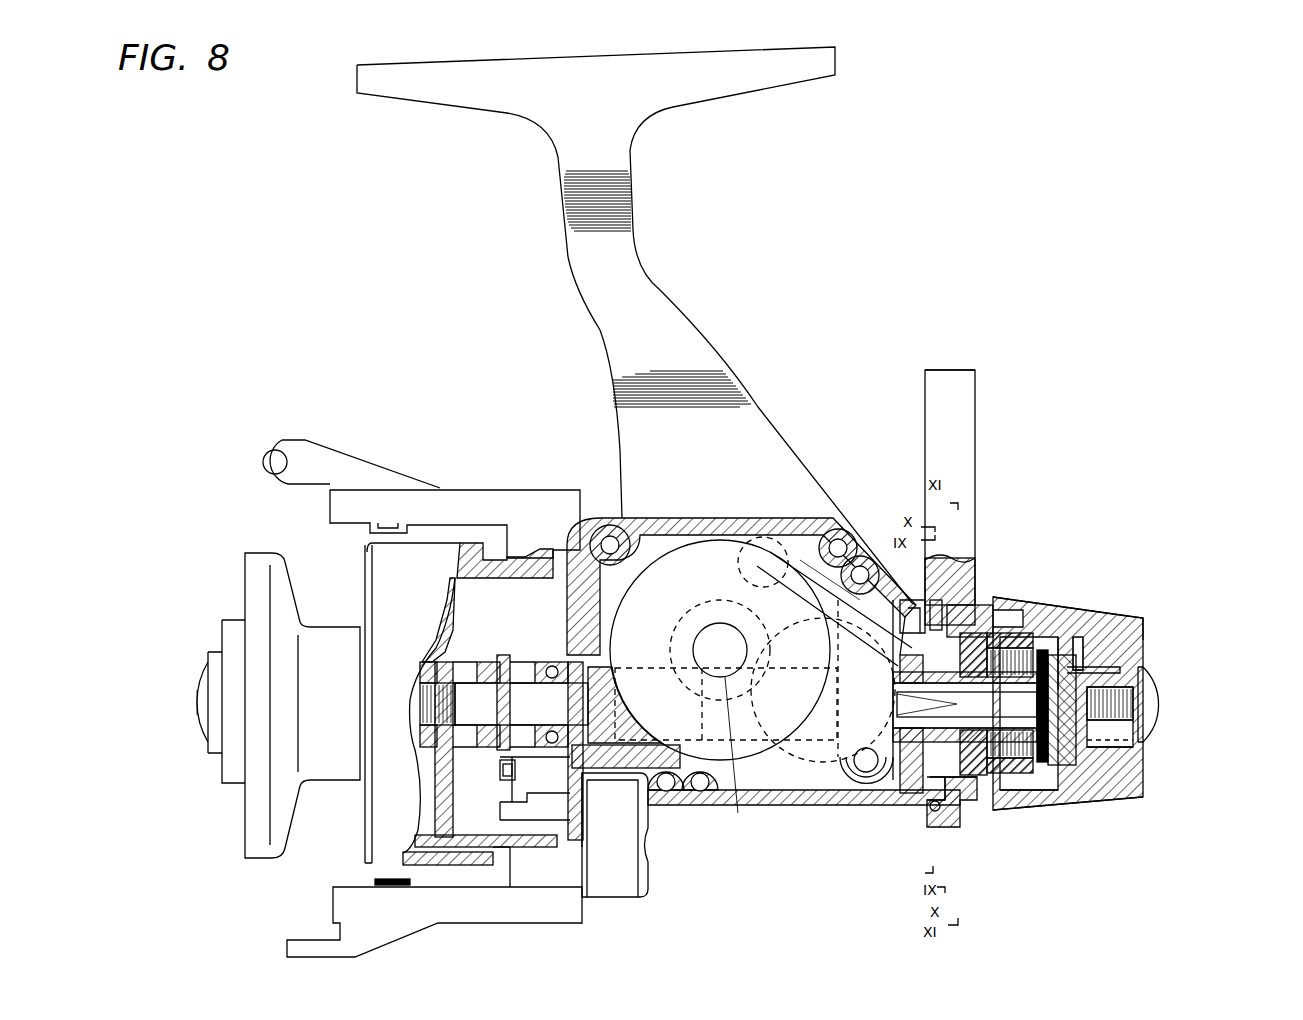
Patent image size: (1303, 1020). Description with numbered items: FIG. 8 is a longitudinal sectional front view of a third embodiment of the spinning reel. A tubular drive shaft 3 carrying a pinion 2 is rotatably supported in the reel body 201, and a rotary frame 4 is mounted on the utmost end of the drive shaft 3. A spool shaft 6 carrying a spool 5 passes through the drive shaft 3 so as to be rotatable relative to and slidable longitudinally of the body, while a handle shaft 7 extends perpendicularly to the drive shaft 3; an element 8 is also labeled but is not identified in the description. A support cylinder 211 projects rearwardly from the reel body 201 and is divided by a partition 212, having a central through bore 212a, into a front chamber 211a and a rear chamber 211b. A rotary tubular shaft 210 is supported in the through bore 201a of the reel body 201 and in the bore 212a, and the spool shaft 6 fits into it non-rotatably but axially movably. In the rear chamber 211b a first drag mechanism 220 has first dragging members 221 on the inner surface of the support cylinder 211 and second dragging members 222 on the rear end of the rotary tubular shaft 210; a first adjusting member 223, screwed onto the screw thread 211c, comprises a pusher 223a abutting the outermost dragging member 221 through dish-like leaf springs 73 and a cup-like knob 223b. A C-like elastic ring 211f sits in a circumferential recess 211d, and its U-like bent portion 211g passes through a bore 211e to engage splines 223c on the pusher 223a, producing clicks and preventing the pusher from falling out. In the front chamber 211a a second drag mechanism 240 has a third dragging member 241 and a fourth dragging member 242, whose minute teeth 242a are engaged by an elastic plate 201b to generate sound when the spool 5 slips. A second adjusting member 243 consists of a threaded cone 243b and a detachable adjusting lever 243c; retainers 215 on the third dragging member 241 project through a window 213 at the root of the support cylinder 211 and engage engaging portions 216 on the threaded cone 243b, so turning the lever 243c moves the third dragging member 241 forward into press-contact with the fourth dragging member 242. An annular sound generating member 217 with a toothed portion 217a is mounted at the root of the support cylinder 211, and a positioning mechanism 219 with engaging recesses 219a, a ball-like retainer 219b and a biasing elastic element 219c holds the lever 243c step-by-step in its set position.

The pinion 2 is at (640, 780).
The tubular drive shaft 3 is at (492, 713).
The rotary frame 4 is at (493, 850).
The spool 5 is at (323, 787).
The spool shaft 6 is at (413, 710).
The handle shaft 7 is at (732, 758).
The bearing 8 is at (697, 753).
The dish-like leaf springs 73 is at (1027, 785).
The reel body 201 is at (803, 518).
The through bore 201a is at (749, 704).
The elastic plate 201b is at (816, 649).
The rotary tubular shaft 210 is at (720, 662).
The support cylinder 211 is at (1073, 783).
The front chamber 211a is at (967, 788).
The rear chamber 211b is at (1145, 788).
The screw thread 211c is at (1030, 790).
The recess 211d is at (1085, 660).
The bore 211e is at (1148, 620).
The elastic ring 211f is at (1080, 660).
The bent portion 211g is at (1143, 650).
The partition 212 is at (968, 787).
The central through bore 212a is at (967, 704).
The window 213 is at (965, 597).
The retainers 215 is at (968, 615).
The engaging portions 216 is at (1002, 622).
The sound generating member 217 is at (927, 627).
The toothed portion 217a is at (947, 582).
The positioning mechanism 219 is at (900, 892).
The engaging recesses 219a is at (932, 808).
The retainer 219b is at (936, 810).
The bearing outer race 219c is at (933, 810).
The first drag mechanism 220 is at (1140, 805).
The first dragging members 221 is at (1008, 777).
The second dragging members 222 is at (1023, 777).
The first adjusting member 223 is at (1240, 722).
The pusher 223a is at (1147, 737).
The knob 223b is at (1130, 768).
The splines 223c is at (1147, 672).
The second drag mechanism 240 is at (913, 478).
The third dragging member 241 is at (866, 772).
The fourth dragging member 242 is at (923, 787).
The minute teeth 242a is at (905, 672).
The second adjusting member 243 is at (978, 497).
The threaded cone 243b is at (993, 627).
The adjusting lever 243c is at (970, 452).